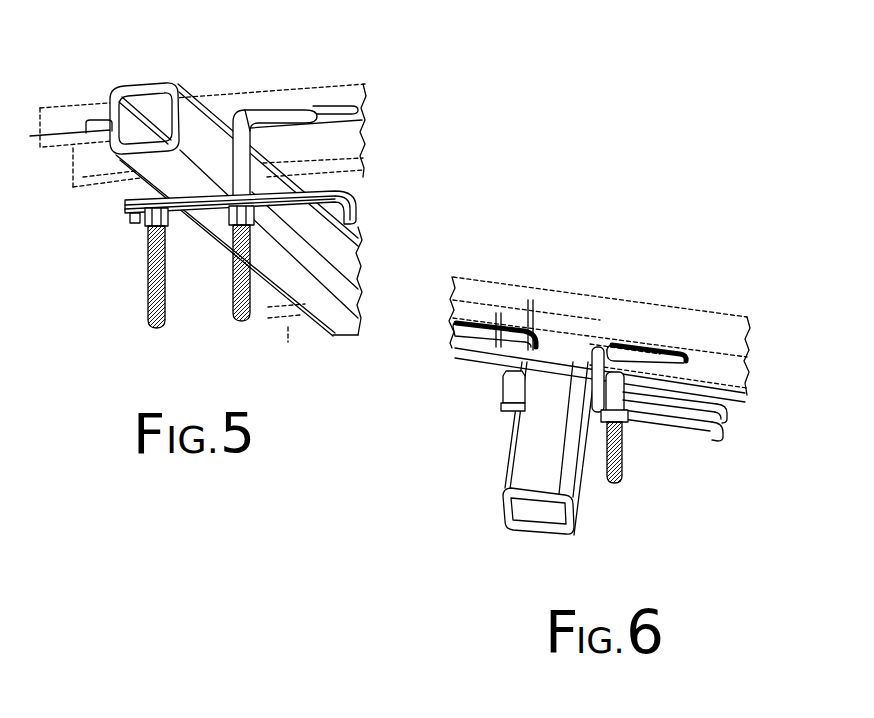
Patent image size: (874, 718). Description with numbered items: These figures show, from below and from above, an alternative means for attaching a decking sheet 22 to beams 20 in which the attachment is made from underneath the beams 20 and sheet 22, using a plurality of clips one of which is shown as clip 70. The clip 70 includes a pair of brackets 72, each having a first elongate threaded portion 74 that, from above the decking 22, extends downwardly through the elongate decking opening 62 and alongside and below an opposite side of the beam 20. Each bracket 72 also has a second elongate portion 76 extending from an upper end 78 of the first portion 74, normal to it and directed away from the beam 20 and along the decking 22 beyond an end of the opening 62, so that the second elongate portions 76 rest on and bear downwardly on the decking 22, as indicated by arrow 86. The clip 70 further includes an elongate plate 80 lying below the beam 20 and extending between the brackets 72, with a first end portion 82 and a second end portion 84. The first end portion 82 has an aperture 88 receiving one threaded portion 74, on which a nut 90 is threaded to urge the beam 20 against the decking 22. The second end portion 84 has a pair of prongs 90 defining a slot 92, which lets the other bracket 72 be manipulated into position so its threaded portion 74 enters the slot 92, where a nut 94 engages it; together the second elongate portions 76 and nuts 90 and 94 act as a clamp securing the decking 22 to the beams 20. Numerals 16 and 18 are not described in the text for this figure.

In FIG. 5, the vehicle frame 16 is at (430, 292).
In FIG. 6, the vehicle frame 16 is at (487, 323).
In FIG. 5, the strap 18 is at (243, 109).
In FIG. 6, the strap 18 is at (530, 327).
In FIG. 5, the beam 20 is at (333, 333).
In FIG. 6, the beam 20 is at (500, 471).
In FIG. 5, the decking sheet 22 is at (347, 87).
In FIG. 6, the decking sheet 22 is at (470, 278).
In FIG. 5, the decking opening 62 is at (270, 140).
In FIG. 6, the decking opening 62 is at (498, 350).
In FIG. 5, the clip 70 is at (260, 193).
In FIG. 6, the clip 70 is at (607, 398).
In FIG. 5, the bracket 72 is at (300, 106).
In FIG. 6, the bracket 72 is at (462, 353).
In FIG. 5, the first elongate threaded portion 74 is at (128, 203).
In FIG. 6, the first elongate threaded portion 74 is at (507, 383).
In FIG. 5, the second elongate portion 76 is at (88, 119).
In FIG. 6, the second elongate portion 76 is at (648, 345).
In FIG. 5, the upper end 78 is at (247, 120).
In FIG. 5, the elongate plate 80 is at (143, 257).
In FIG. 5, the first end portion 82 is at (142, 224).
In FIG. 6, the first end portion 82 is at (507, 398).
In FIG. 5, the second end portion 84 is at (240, 217).
In FIG. 6, the second end portion 84 is at (700, 457).
In FIG. 6, the arrow 86 is at (707, 363).
In FIG. 6, the aperture 88 is at (525, 401).
In FIG. 5, the nut 90 is at (163, 193).
In FIG. 6, the nut 90 is at (732, 405).
In FIG. 6, the slot 92 is at (726, 430).
In FIG. 5, the nut 94 is at (170, 225).
In FIG. 6, the nut 94 is at (593, 418).